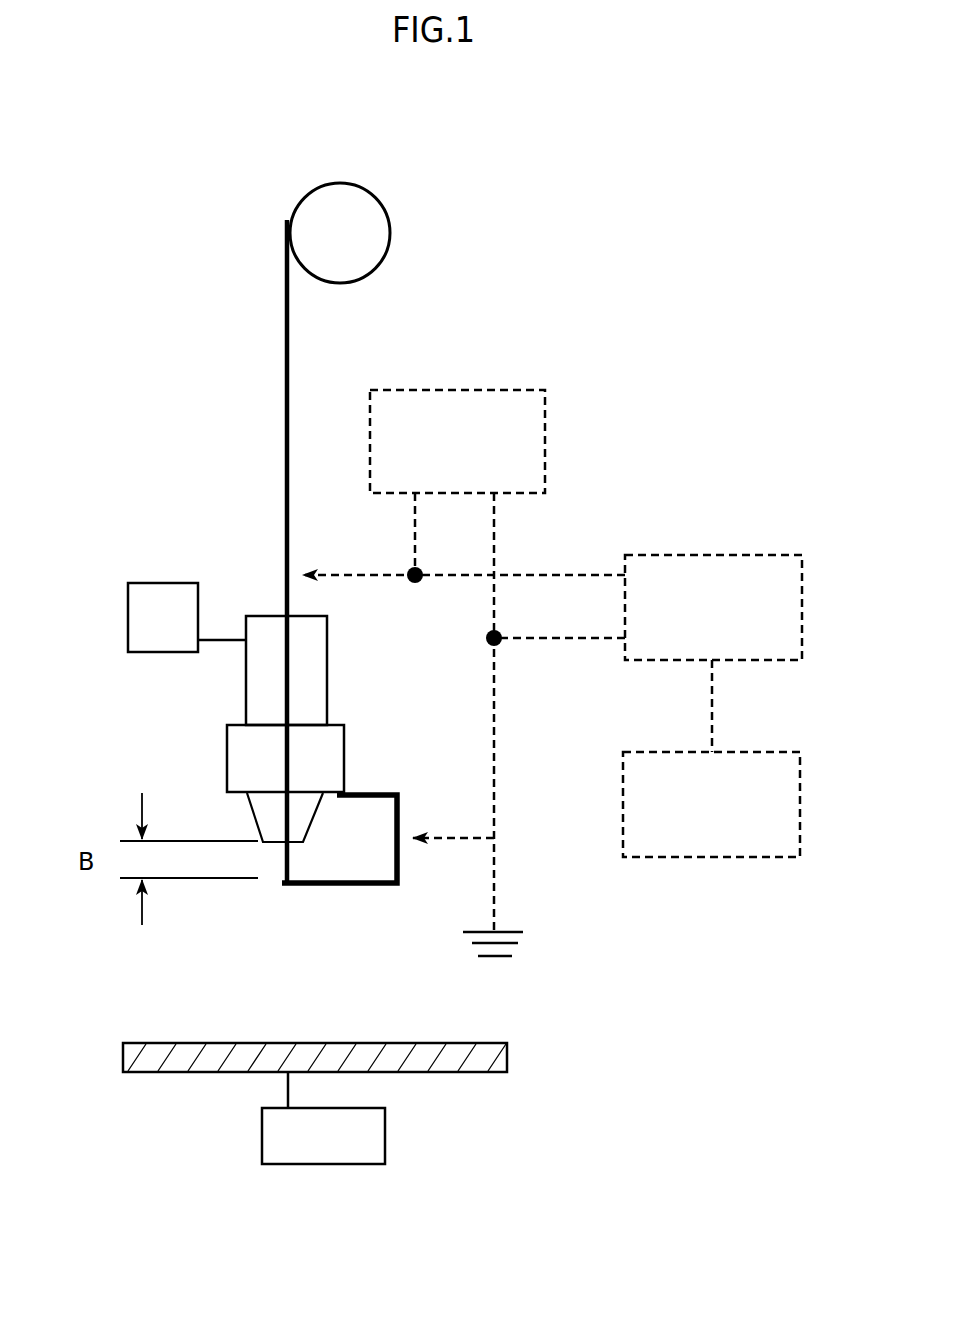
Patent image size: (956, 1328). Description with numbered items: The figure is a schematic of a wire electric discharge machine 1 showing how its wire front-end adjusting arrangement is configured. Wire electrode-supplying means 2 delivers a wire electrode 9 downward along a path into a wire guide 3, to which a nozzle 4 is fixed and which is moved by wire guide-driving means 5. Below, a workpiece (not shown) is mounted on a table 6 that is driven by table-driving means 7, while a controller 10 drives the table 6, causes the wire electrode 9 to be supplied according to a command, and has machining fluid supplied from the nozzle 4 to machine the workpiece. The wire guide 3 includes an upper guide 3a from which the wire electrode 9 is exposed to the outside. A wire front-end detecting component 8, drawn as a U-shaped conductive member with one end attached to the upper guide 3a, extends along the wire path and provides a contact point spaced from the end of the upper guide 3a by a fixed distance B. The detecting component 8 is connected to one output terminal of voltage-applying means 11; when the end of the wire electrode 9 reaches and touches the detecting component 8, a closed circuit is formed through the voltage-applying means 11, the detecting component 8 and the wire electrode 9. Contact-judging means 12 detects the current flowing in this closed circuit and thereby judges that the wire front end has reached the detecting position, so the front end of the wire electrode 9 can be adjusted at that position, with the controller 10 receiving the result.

The wire electric discharge machine 1 is at (578, 1018).
The wire electrode-supplying means 2 is at (394, 219).
The wire guide 3 is at (345, 661).
The upper guide 3a is at (341, 756).
The nozzle 4 is at (268, 810).
The wire guide-driving means 5 is at (173, 582).
The table 6 is at (121, 1058).
The table-driving means 7 is at (287, 1162).
The wire front-end detecting component 8 is at (330, 895).
The wire electrode 9 is at (282, 378).
The controller 10 is at (790, 750).
The voltage-applying means 11 is at (510, 382).
The contact-judging means 12 is at (765, 553).